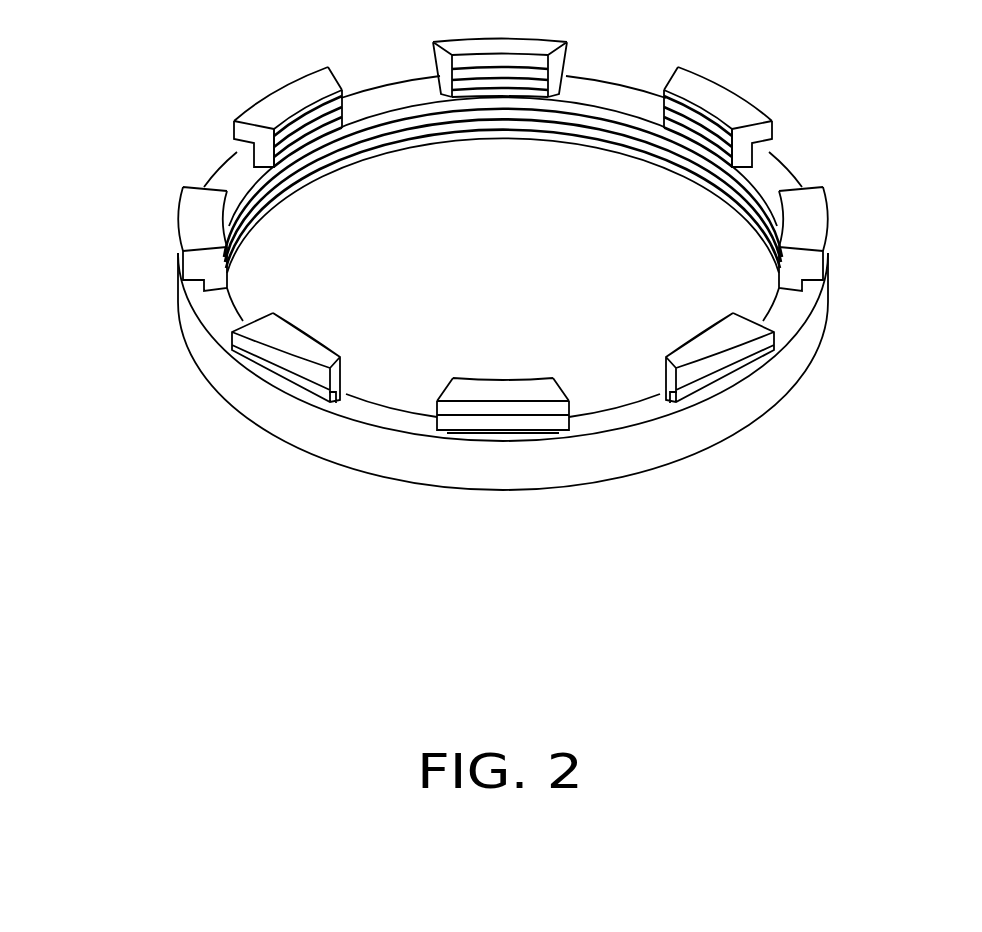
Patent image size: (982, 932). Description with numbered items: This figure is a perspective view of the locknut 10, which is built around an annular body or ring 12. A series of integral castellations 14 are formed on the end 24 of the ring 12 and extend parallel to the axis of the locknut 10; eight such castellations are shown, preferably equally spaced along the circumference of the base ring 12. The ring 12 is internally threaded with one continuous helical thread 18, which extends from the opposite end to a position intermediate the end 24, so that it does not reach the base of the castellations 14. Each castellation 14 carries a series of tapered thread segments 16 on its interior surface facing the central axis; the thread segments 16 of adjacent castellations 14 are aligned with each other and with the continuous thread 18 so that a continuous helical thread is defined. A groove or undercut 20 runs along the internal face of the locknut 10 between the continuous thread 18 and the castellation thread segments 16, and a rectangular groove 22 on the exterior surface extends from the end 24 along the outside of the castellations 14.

The locknut 10 is at (148, 426).
The annular body or ring 12 is at (610, 462).
The castellations 14 is at (242, 131).
The tapered thread segments 16 is at (343, 97).
The continuous helical thread 18 is at (530, 133).
The groove or undercut 20 is at (283, 192).
The rectangular groove 22 is at (742, 389).
The end 24 is at (377, 423).